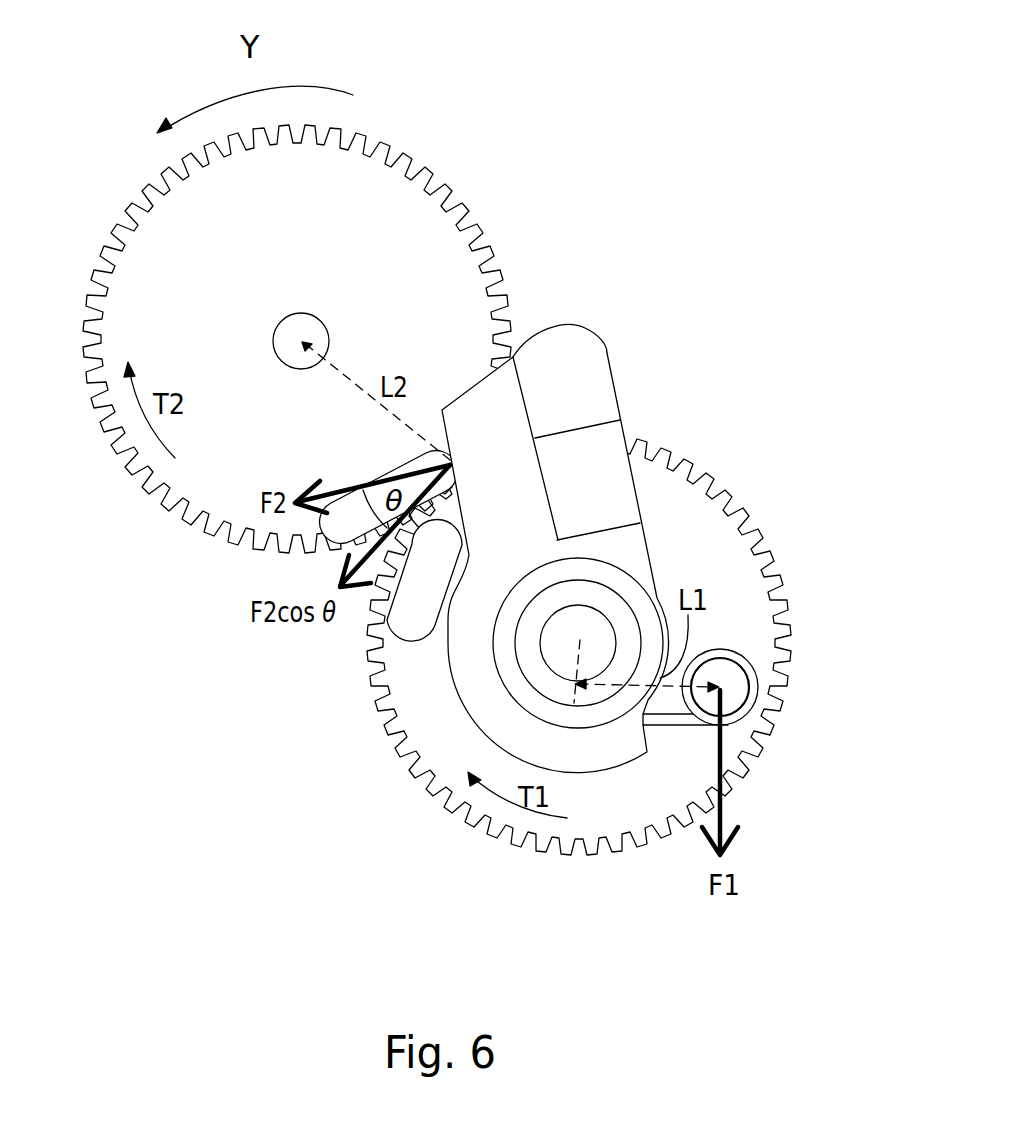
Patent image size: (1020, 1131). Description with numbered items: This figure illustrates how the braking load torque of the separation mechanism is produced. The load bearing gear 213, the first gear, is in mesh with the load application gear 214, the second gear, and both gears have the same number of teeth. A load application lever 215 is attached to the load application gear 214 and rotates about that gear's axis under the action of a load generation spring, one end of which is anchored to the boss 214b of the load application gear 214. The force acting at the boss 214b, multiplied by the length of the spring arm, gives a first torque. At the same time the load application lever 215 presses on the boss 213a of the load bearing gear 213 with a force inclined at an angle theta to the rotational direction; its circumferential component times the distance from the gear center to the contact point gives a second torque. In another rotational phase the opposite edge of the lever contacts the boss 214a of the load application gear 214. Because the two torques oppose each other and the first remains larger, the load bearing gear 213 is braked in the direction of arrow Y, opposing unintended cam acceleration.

The load bearing gear 213 is at (355, 233).
The boss of the load bearing gear 213a is at (340, 520).
The load application gear 214 is at (667, 493).
The boss of the load application gear 214a is at (397, 623).
The boss (load generation spring anchoring portion) 214b is at (720, 677).
The load application lever 215 is at (487, 417).